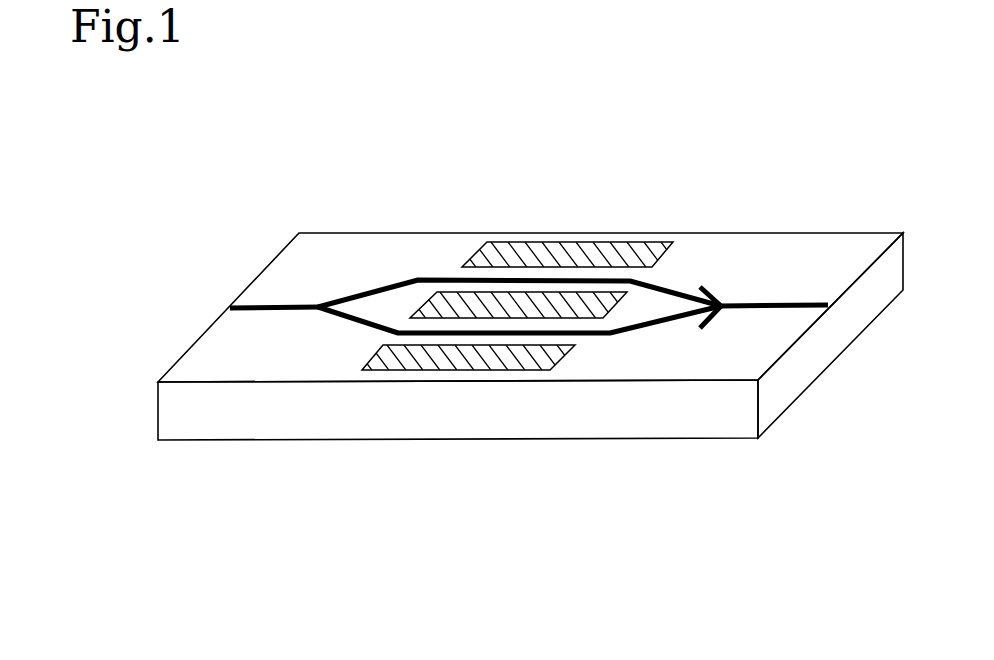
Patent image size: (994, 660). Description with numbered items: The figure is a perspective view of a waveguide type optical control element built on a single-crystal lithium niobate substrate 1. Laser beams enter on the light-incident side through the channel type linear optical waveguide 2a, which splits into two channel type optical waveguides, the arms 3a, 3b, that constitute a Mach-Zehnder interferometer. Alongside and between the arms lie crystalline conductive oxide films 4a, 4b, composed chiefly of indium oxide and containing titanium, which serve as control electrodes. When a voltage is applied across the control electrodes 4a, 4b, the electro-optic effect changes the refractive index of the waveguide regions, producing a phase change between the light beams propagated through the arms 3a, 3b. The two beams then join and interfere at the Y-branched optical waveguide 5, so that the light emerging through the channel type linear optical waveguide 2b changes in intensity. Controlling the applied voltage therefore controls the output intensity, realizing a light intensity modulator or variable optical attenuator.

The single-crystal lithium niobate substrate 1 is at (237, 348).
The channel type linear optical waveguide 2a is at (273, 302).
The channel type linear optical waveguide 2b is at (775, 303).
The channel type optical waveguide (arm) 3a is at (347, 295).
The channel type optical waveguide (arm) 3b is at (360, 317).
The crystalline conductive oxide film 4a is at (433, 350).
The crystalline conductive oxide film 4b is at (533, 303).
The Y-branched optical waveguide 5 is at (727, 300).